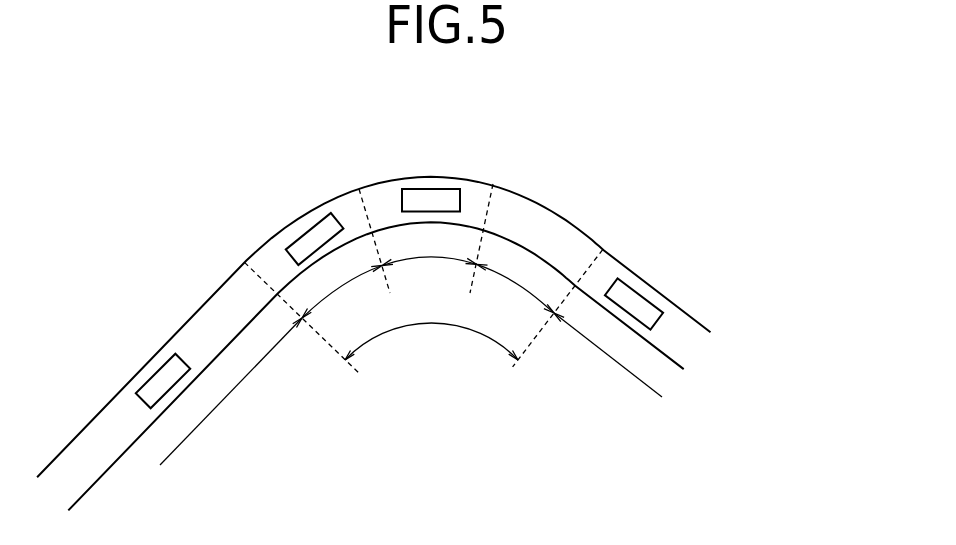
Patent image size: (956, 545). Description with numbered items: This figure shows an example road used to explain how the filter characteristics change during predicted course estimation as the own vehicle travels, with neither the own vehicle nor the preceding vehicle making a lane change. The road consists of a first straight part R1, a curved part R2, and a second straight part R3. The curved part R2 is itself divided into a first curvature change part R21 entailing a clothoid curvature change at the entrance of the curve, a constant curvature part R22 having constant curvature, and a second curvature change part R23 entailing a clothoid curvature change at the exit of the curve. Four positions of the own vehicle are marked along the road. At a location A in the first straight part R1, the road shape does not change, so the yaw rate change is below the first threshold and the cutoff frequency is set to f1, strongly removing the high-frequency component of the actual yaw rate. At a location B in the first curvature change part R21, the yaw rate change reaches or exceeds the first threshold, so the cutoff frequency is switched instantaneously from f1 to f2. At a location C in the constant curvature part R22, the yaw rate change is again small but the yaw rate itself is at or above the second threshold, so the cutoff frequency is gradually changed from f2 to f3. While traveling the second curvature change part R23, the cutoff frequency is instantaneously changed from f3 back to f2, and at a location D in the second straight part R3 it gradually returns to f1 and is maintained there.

The location A is at (143, 386).
The location B is at (293, 241).
The location C is at (450, 190).
The location D is at (655, 297).
The first straight part R1 is at (231, 391).
The curved part R2 is at (431, 341).
The first curvature change part R21 is at (342, 294).
The constant curvature part R22 is at (429, 273).
The second curvature change part R23 is at (516, 293).
The second straight part R3 is at (608, 355).